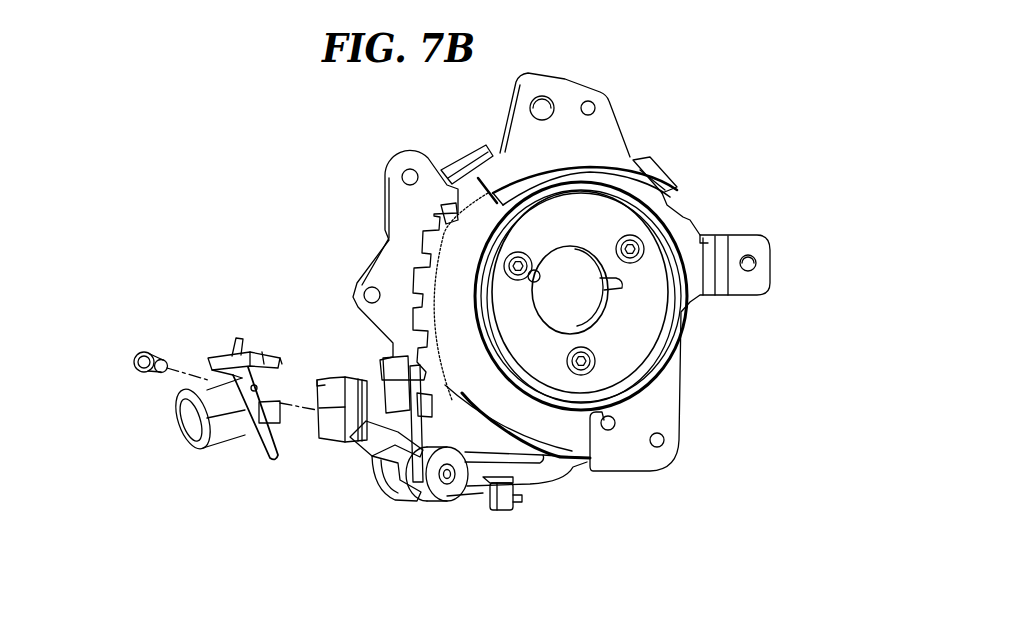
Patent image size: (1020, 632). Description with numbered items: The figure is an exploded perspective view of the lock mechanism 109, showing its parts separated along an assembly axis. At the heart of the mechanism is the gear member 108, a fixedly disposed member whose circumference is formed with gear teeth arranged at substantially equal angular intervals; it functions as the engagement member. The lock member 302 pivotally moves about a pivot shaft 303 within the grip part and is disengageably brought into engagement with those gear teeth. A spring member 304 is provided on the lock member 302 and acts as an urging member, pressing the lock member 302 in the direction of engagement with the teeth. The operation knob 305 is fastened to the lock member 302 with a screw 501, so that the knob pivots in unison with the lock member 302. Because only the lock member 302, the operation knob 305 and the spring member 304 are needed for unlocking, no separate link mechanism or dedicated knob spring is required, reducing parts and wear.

The gear member 108 is at (580, 440).
The lock mechanism 109 is at (321, 179).
The lock member 302 is at (330, 383).
The pivot shaft 303 is at (450, 480).
The spring member 304 is at (417, 423).
The operation knob 305 is at (207, 370).
The screw 501 is at (133, 357).